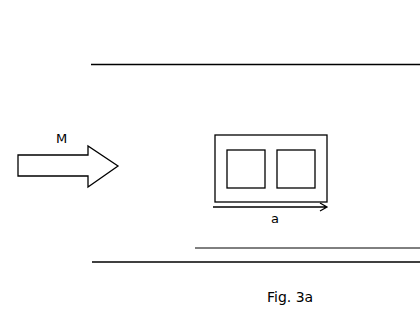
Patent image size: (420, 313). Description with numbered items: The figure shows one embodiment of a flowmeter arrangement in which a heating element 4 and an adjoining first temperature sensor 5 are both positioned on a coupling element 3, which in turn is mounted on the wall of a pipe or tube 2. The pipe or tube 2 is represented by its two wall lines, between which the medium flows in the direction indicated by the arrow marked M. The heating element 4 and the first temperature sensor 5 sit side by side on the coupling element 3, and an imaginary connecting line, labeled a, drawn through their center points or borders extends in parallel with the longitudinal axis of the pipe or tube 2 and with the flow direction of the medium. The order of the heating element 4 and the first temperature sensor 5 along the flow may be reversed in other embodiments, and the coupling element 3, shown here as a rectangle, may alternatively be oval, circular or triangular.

The pipe or tube 2 is at (170, 63).
The coupling element 3 is at (213, 148).
The heating element 4 is at (246, 169).
The first temperature sensor 5 is at (296, 169).